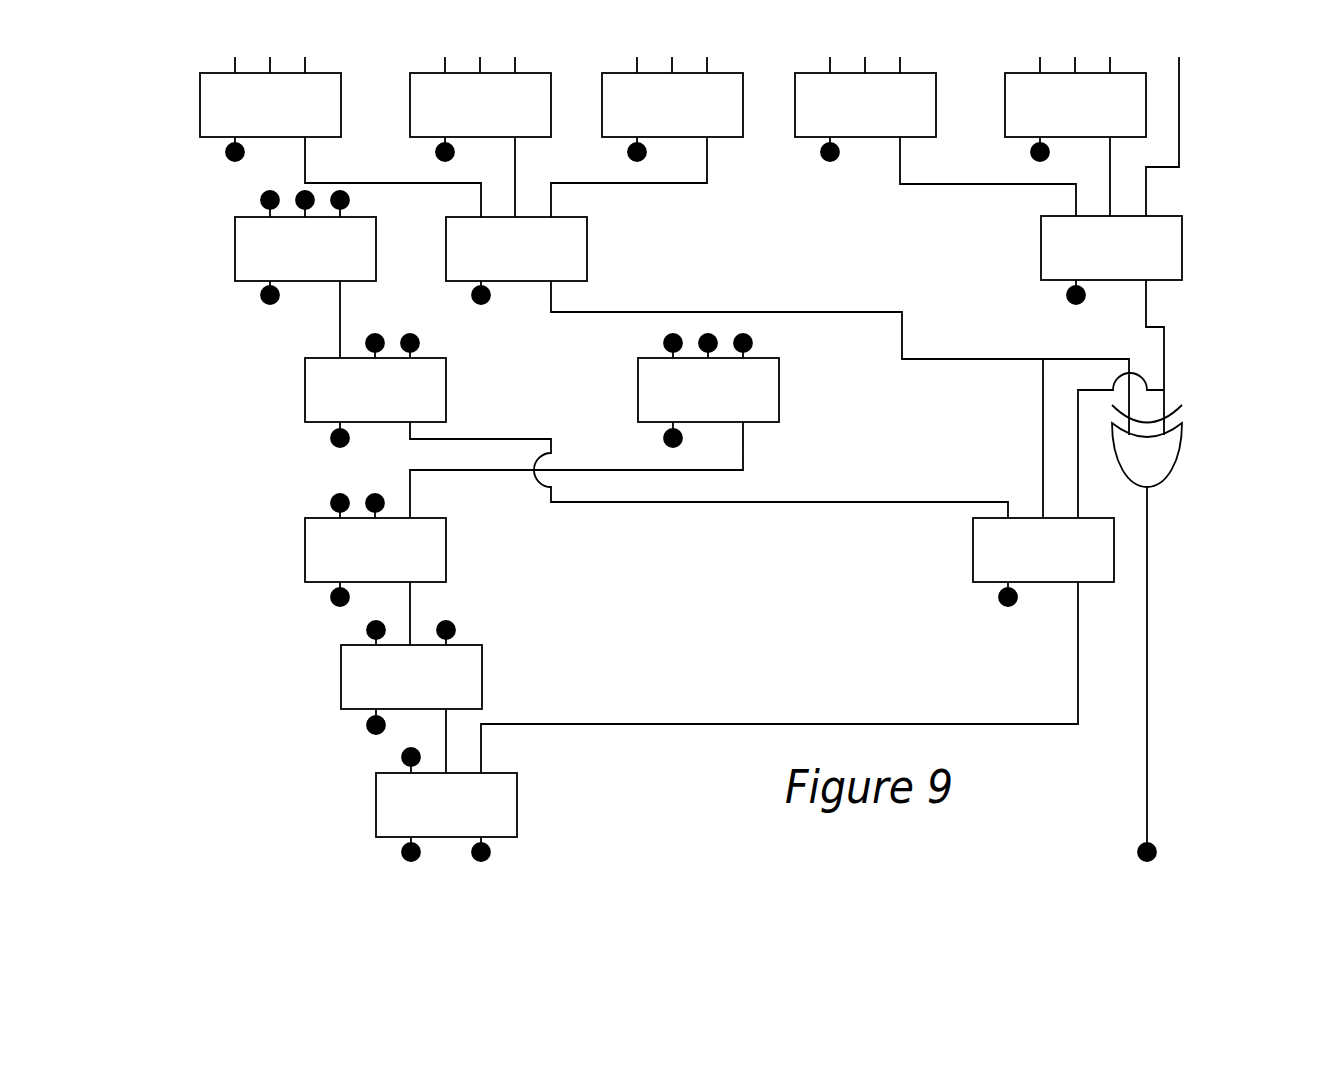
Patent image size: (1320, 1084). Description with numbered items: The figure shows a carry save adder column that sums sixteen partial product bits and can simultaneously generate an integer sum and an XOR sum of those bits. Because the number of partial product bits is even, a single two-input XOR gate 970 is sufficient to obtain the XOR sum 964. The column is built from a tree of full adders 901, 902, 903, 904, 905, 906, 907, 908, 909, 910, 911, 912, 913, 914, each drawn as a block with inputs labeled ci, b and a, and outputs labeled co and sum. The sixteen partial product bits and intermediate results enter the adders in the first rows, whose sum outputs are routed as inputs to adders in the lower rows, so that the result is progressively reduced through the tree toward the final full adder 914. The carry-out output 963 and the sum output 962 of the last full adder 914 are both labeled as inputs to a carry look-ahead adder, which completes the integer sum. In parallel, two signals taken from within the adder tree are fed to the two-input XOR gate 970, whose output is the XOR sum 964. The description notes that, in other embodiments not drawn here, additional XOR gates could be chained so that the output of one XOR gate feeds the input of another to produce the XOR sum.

The full adder 901 is at (226, 73).
The full adder 902 is at (436, 73).
The full adder 903 is at (628, 73).
The full adder 904 is at (821, 73).
The full adder 905 is at (1031, 73).
The full adder 906 is at (258, 217).
The full adder 907 is at (469, 217).
The full adder 908 is at (1064, 216).
The full adder 909 is at (328, 358).
The full adder 910 is at (661, 358).
The full adder 911 is at (328, 518).
The full adder 912 is at (973, 550).
The full adder 913 is at (364, 645).
The full adder 914 is at (399, 773).
The sum output input to a carry look-ahead adder 962 is at (486, 853).
The carry output input to a carry look-ahead adder 963 is at (406, 853).
The XOR sum 964 is at (1138, 852).
The two-input XOR gate 970 is at (1182, 431).